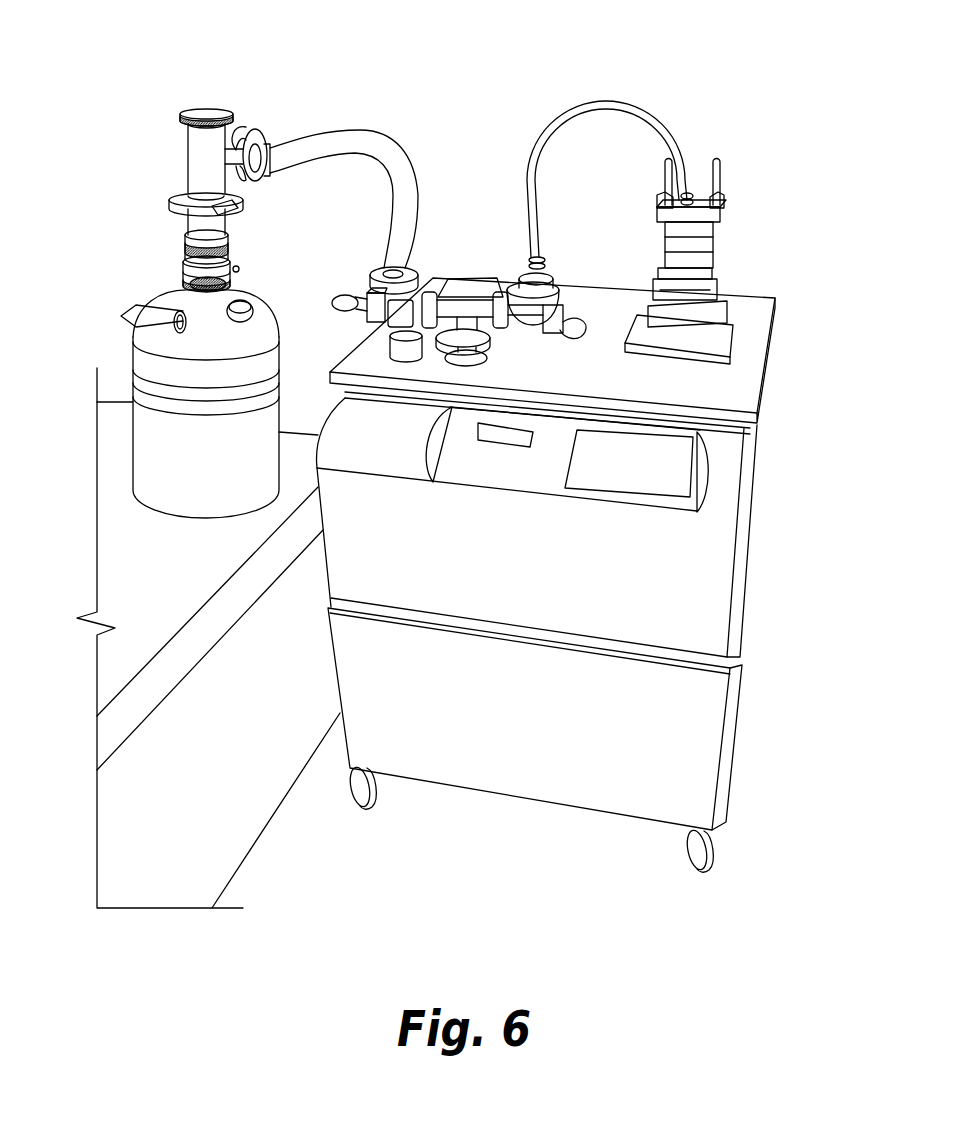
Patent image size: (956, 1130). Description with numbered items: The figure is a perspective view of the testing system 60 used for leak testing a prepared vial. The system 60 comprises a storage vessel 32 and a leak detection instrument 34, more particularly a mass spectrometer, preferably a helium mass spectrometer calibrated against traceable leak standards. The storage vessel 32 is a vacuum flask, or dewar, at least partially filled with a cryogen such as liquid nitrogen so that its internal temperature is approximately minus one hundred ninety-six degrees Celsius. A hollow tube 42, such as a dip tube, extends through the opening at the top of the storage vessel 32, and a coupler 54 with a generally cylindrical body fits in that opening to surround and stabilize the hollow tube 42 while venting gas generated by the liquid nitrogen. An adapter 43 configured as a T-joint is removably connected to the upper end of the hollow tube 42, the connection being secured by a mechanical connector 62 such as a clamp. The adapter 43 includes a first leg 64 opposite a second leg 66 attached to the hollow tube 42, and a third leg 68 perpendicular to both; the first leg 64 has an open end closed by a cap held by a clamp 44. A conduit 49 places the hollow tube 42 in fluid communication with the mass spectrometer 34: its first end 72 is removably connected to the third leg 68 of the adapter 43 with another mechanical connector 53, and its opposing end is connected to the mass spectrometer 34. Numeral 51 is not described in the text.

The testing system 60 is at (771, 80).
The storage vessel 32 is at (147, 358).
The leak detection instrument 34 is at (697, 460).
The hollow tube 42 is at (193, 233).
The adapter 43 is at (203, 182).
The clamp 44 is at (187, 111).
The conduit 49 is at (367, 142).
The hose coupling flange 51 is at (257, 138).
The mechanical connector 53 is at (400, 266).
The coupler 54 is at (187, 270).
The mechanical connector 62 is at (186, 203).
The first leg 64 is at (200, 132).
The second leg 66 is at (222, 188).
The third leg 68 is at (240, 126).
The first end of conduit 72 is at (268, 176).